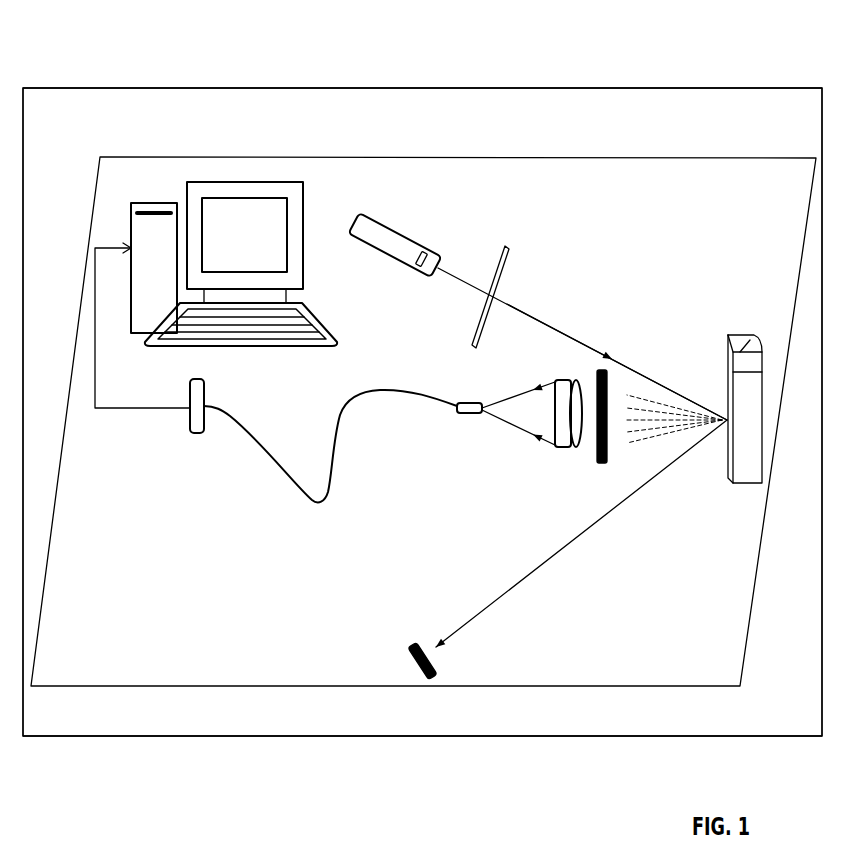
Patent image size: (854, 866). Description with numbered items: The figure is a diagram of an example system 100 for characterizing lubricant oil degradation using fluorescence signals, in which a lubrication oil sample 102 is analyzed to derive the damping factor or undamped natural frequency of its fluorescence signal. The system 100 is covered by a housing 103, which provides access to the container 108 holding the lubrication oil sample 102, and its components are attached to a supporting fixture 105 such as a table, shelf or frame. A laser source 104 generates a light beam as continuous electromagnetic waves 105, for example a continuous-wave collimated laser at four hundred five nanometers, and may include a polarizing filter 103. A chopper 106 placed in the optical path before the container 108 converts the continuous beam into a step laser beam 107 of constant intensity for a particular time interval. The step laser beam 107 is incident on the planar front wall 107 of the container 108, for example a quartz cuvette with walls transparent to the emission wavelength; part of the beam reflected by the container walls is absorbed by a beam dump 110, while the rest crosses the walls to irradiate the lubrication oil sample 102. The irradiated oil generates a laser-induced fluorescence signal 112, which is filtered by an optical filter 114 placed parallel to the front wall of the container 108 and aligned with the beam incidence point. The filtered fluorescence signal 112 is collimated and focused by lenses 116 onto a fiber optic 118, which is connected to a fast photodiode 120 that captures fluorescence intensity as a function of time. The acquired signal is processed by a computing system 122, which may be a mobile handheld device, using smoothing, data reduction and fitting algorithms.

The system 100 is at (142, 82).
The lubrication oil sample 102 is at (745, 484).
The housing 103 is at (423, 256).
The laser source 104 is at (378, 224).
The supporting fixture 105 is at (452, 272).
The chopper 106 is at (505, 254).
The step laser beam 107 is at (552, 327).
The container 108 is at (745, 350).
The beam dump 110 is at (411, 666).
The fluorescence signal 112 is at (657, 394).
The optical filter 114 is at (597, 460).
The lenses 116 is at (554, 446).
The fiber optic 118 is at (307, 499).
The fast photodiode 120 is at (186, 430).
The computing system 122 is at (265, 193).